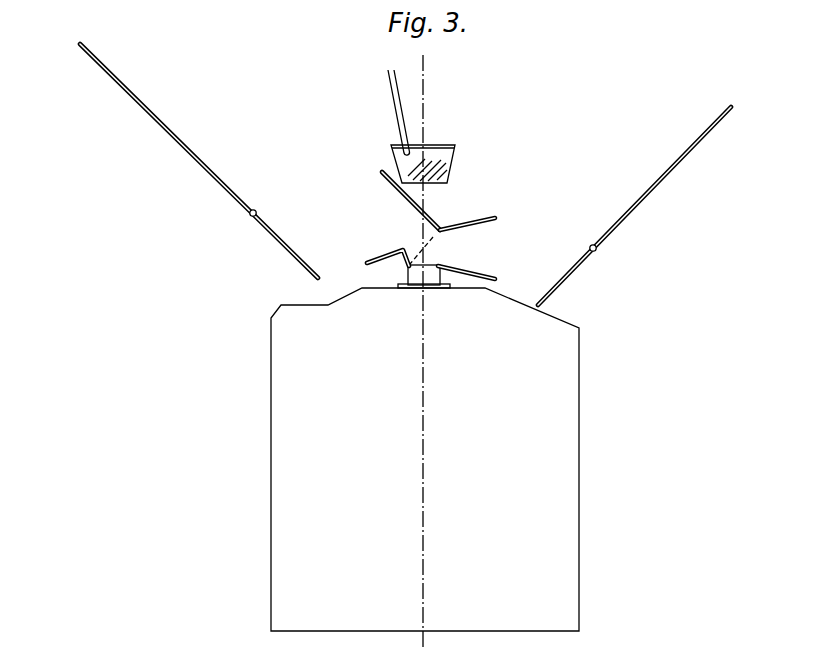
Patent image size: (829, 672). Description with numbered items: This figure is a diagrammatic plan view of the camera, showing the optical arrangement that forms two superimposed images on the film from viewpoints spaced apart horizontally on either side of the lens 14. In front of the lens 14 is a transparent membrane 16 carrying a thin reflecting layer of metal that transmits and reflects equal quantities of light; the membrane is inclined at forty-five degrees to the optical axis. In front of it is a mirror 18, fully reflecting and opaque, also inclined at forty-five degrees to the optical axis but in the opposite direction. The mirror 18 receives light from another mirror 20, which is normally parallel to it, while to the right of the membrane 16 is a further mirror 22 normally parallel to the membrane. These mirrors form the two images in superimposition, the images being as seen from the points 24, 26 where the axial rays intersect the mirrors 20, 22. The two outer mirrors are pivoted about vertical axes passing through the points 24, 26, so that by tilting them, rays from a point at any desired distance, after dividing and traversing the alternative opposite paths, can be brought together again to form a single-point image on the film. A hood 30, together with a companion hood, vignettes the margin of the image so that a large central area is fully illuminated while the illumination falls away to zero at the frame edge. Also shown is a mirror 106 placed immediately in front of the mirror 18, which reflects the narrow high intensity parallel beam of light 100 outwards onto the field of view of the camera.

The parallel beam of light 100 is at (392, 92).
The mirror 106 is at (447, 145).
The mirror 18 is at (397, 190).
The transparent membrane 16 is at (435, 240).
The hood 30 is at (389, 258).
The lens 14 is at (435, 282).
The mirror 20 is at (143, 110).
The point 24 is at (249, 215).
The mirror 22 is at (662, 183).
The point 26 is at (597, 252).